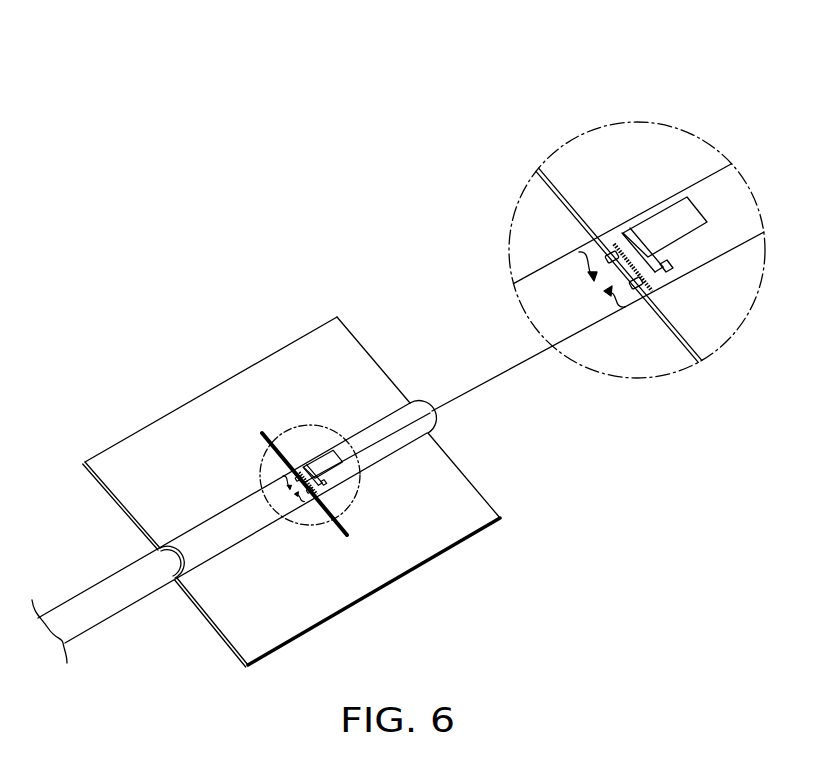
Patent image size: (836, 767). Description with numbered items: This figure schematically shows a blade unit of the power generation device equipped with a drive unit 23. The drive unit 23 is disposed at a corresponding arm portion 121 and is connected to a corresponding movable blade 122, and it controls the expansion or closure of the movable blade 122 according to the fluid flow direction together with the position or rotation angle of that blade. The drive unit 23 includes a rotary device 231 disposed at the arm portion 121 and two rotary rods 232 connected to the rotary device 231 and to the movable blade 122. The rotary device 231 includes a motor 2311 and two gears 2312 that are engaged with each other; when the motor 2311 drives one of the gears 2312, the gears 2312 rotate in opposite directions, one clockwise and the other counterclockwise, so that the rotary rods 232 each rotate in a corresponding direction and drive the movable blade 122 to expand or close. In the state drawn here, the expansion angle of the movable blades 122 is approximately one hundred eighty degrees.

The arm portion 121 is at (107, 590).
The movable blade 122 is at (280, 350).
The drive unit 23 is at (548, 556).
The rotary device 231 is at (659, 203).
The motor 2311 is at (647, 235).
The gear 2312 is at (610, 233).
The rotary rod 232 is at (262, 437).